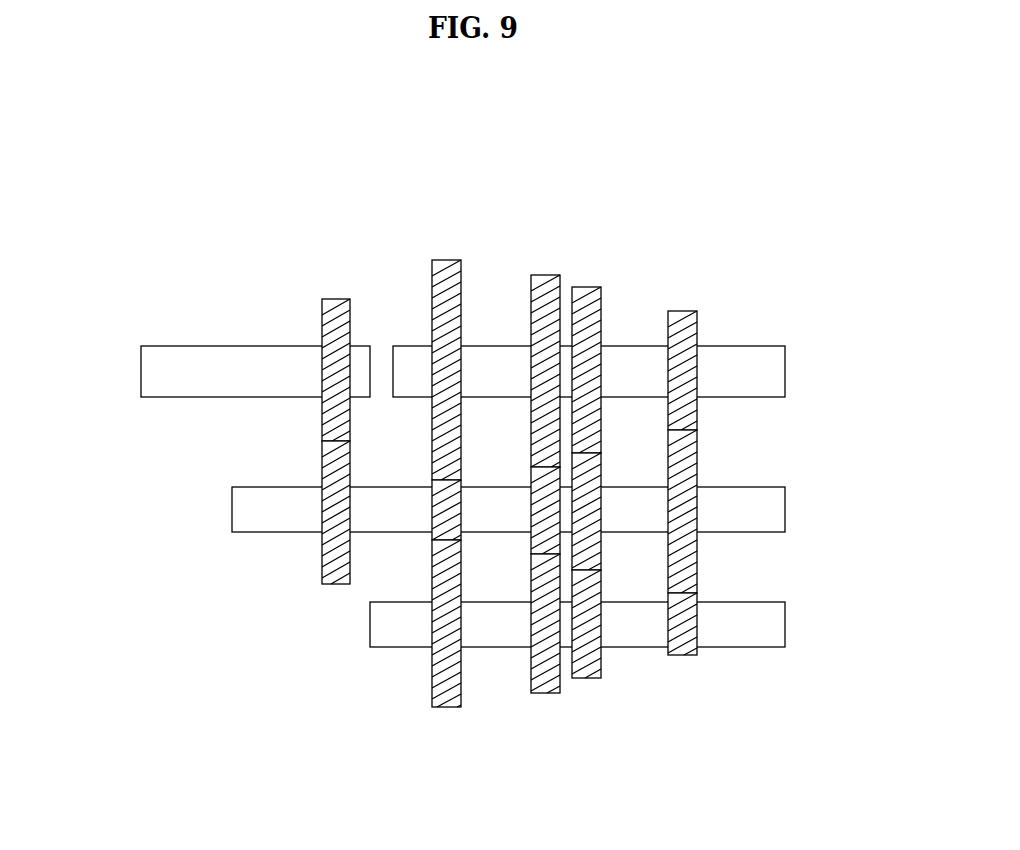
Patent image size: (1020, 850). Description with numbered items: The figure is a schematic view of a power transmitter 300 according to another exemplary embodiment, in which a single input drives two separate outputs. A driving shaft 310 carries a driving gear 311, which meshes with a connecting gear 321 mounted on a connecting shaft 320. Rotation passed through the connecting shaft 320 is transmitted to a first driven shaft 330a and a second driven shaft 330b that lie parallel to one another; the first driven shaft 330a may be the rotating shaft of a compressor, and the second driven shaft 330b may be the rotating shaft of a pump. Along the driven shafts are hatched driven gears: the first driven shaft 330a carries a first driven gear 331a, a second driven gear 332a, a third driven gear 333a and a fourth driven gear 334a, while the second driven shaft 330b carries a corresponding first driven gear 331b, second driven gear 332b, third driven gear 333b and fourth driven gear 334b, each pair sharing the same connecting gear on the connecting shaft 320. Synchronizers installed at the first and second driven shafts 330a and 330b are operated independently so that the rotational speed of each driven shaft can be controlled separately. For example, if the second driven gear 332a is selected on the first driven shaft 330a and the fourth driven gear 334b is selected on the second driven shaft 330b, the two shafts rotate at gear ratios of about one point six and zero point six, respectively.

The power transmitter 300 is at (494, 157).
The driving shaft 310 is at (141, 372).
The driving gear 311 is at (342, 299).
The connecting gear 321 is at (335, 584).
The connecting shaft 320 is at (785, 508).
The first driven shaft 330a is at (785, 371).
The second driven shaft 330b is at (785, 622).
The first driven gear of the first driven shaft 331a is at (446, 260).
The first driven gear of the second driven shaft 331b is at (445, 707).
The second driven gear of the first driven shaft 332a is at (546, 275).
The second driven gear of the second driven shaft 332b is at (545, 693).
The third driven gear of the first driven shaft 333a is at (588, 287).
The third driven gear of the second driven shaft 333b is at (585, 678).
The fourth driven gear of the first driven shaft 334a is at (682, 311).
The fourth driven gear of the second driven shaft 334b is at (682, 655).